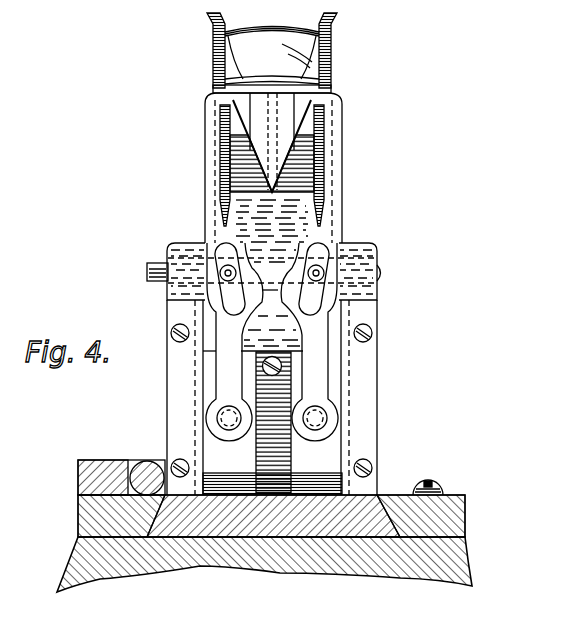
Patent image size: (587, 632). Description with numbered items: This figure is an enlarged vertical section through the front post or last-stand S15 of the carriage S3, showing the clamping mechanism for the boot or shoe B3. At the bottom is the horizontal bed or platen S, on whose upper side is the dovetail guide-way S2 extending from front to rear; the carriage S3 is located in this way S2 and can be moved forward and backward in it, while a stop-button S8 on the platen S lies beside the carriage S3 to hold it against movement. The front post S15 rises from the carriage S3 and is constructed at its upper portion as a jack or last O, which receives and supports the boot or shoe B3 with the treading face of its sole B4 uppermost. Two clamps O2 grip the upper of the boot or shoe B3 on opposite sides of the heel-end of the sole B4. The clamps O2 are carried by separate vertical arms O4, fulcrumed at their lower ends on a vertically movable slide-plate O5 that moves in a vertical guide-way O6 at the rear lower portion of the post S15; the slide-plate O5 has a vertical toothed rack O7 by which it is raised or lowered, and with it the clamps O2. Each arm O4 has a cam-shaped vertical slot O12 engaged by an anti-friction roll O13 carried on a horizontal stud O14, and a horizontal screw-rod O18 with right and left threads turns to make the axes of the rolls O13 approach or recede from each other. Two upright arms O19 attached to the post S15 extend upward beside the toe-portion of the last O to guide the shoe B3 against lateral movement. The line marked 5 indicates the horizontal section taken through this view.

The sole B4 is at (272, 60).
The upright arms O19 is at (226, 33).
The clamps O2 is at (212, 97).
The boot or shoe B3 is at (272, 142).
The jack or last O is at (272, 163).
The front post S15 is at (272, 275).
The vertical arms O4 is at (209, 173).
The slide-plate O5 is at (272, 450).
The toothed rack O7 is at (290, 444).
The cam-slots O12 is at (219, 253).
The section line 5- 5 is at (147, 273).
The screw-rod O18 is at (159, 283).
The anti-friction rolls O13 is at (308, 274).
The studs O14 is at (349, 292).
The vertical guide-way O6 is at (202, 430).
The stop-button S8 is at (149, 470).
The dovetail guide-way S2 is at (378, 495).
The carriage S3 is at (271, 516).
The platen S is at (264, 564).